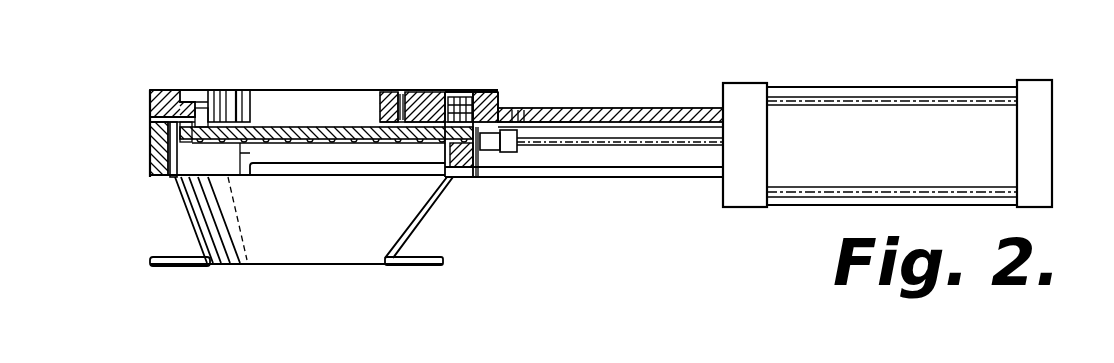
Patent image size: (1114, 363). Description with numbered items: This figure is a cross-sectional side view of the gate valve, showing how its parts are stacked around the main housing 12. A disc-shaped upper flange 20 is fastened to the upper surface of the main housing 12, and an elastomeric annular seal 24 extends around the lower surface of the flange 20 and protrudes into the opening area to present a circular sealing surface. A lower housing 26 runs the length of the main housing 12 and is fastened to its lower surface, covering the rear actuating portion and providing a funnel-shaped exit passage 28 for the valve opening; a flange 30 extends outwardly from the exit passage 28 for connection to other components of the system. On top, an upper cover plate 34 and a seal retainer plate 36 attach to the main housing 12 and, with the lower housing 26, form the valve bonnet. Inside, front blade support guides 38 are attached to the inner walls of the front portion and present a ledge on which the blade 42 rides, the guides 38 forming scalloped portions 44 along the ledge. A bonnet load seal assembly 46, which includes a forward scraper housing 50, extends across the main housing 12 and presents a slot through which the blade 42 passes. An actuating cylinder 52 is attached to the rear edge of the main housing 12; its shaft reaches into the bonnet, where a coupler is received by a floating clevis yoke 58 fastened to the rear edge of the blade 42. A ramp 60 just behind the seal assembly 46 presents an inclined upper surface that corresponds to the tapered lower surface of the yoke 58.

The main housing 12 is at (150, 138).
The upper flange 20 is at (156, 91).
The annular seal 24 is at (208, 108).
The lower housing 26 is at (453, 183).
The exit passage 28 is at (423, 222).
The flange 30 is at (412, 266).
The upper cover plate 34 is at (593, 111).
The seal retainer plate 36 is at (490, 90).
The front blade support guides 38 is at (254, 153).
The blade 42 is at (162, 176).
The scalloped portions 44 is at (332, 140).
The bonnet load seal assembly 46 is at (443, 92).
The forward scraper housing 50 is at (462, 92).
The actuating cylinder 52 is at (845, 85).
The floating clevis yoke 58 is at (497, 150).
The ramp 60 is at (480, 141).